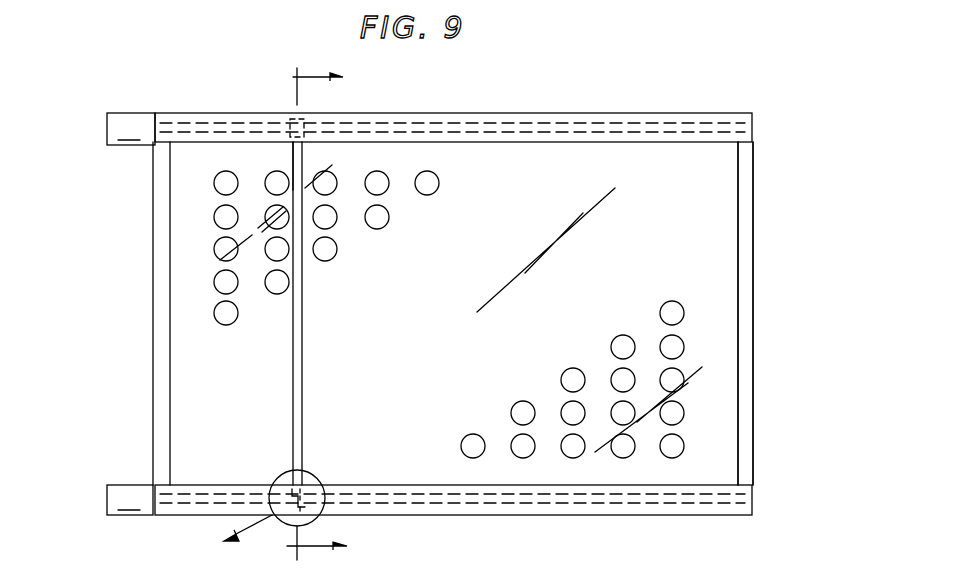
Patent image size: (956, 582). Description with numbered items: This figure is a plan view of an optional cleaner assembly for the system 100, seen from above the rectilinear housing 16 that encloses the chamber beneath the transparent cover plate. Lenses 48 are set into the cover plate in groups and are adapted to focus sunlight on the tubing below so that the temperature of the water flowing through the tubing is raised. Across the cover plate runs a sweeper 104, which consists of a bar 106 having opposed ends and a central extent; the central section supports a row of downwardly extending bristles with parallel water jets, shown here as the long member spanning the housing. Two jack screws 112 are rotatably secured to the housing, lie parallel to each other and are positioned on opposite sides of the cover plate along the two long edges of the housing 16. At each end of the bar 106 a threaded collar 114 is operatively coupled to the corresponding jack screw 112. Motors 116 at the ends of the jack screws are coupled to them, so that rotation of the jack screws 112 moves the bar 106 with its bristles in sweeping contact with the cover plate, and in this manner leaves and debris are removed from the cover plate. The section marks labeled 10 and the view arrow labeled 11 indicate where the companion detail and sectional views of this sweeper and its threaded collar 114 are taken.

The system 100 is at (668, 90).
The jack screws 112 is at (495, 125).
The motors 116 is at (130, 113).
The bar 106 is at (302, 338).
The sweeper 104 is at (304, 190).
The threaded collar 114 is at (292, 128).
The section line 10 is at (303, 317).
The view arrow 11 is at (235, 538).
The lenses 48 is at (380, 186).
The rectilinear housing 16 is at (753, 295).